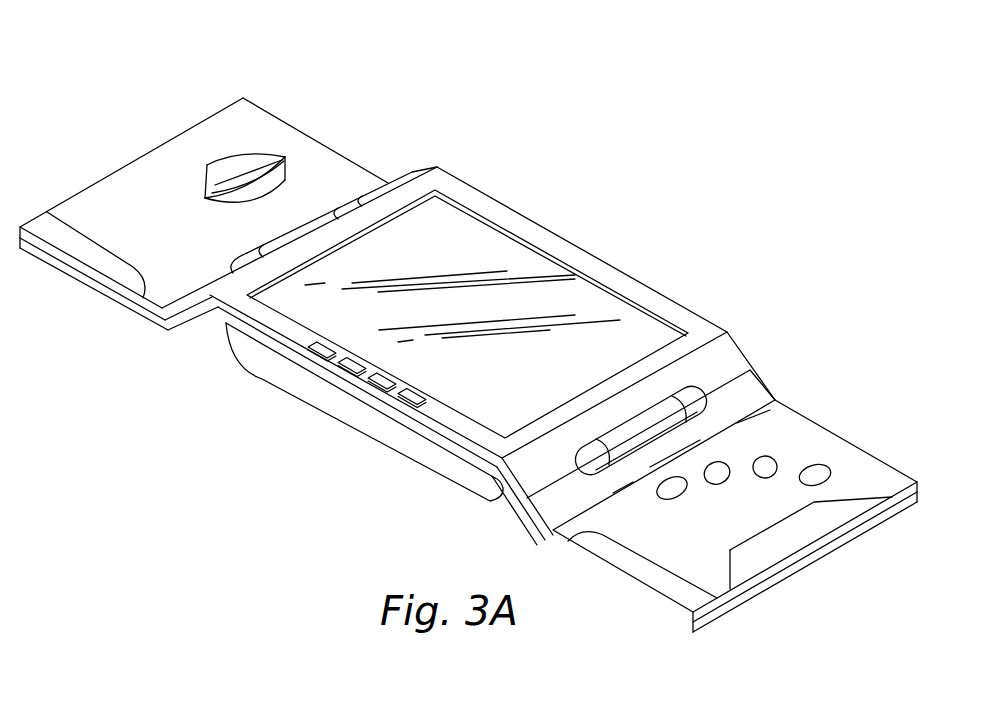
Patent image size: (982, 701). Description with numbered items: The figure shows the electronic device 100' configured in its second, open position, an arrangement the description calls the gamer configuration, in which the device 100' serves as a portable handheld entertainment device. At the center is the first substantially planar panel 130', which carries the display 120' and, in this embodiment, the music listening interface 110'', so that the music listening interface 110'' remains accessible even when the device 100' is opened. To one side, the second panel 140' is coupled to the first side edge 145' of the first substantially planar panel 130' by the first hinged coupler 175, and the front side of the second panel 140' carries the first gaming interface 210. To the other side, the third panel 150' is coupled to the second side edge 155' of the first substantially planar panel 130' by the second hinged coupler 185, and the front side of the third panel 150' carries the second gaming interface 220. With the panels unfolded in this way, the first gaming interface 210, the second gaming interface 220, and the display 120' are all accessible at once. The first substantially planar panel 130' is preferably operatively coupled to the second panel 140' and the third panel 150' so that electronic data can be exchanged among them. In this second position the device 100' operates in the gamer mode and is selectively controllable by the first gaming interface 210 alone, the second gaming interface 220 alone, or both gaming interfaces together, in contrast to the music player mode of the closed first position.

The electronic device 100' is at (468, 339).
The music listening interface 110'' is at (354, 404).
The display 120' is at (467, 314).
The first substantially planar panel 130' is at (492, 319).
The second panel 140' is at (204, 214).
The first side edge 145' is at (186, 344).
The third panel 150' is at (735, 530).
The second side edge 155' is at (506, 511).
The first hinged coupler 175 is at (313, 220).
The second hinged coupler 185 is at (648, 427).
The first gaming interface 210 is at (205, 180).
The second gaming interface 220 is at (672, 486).